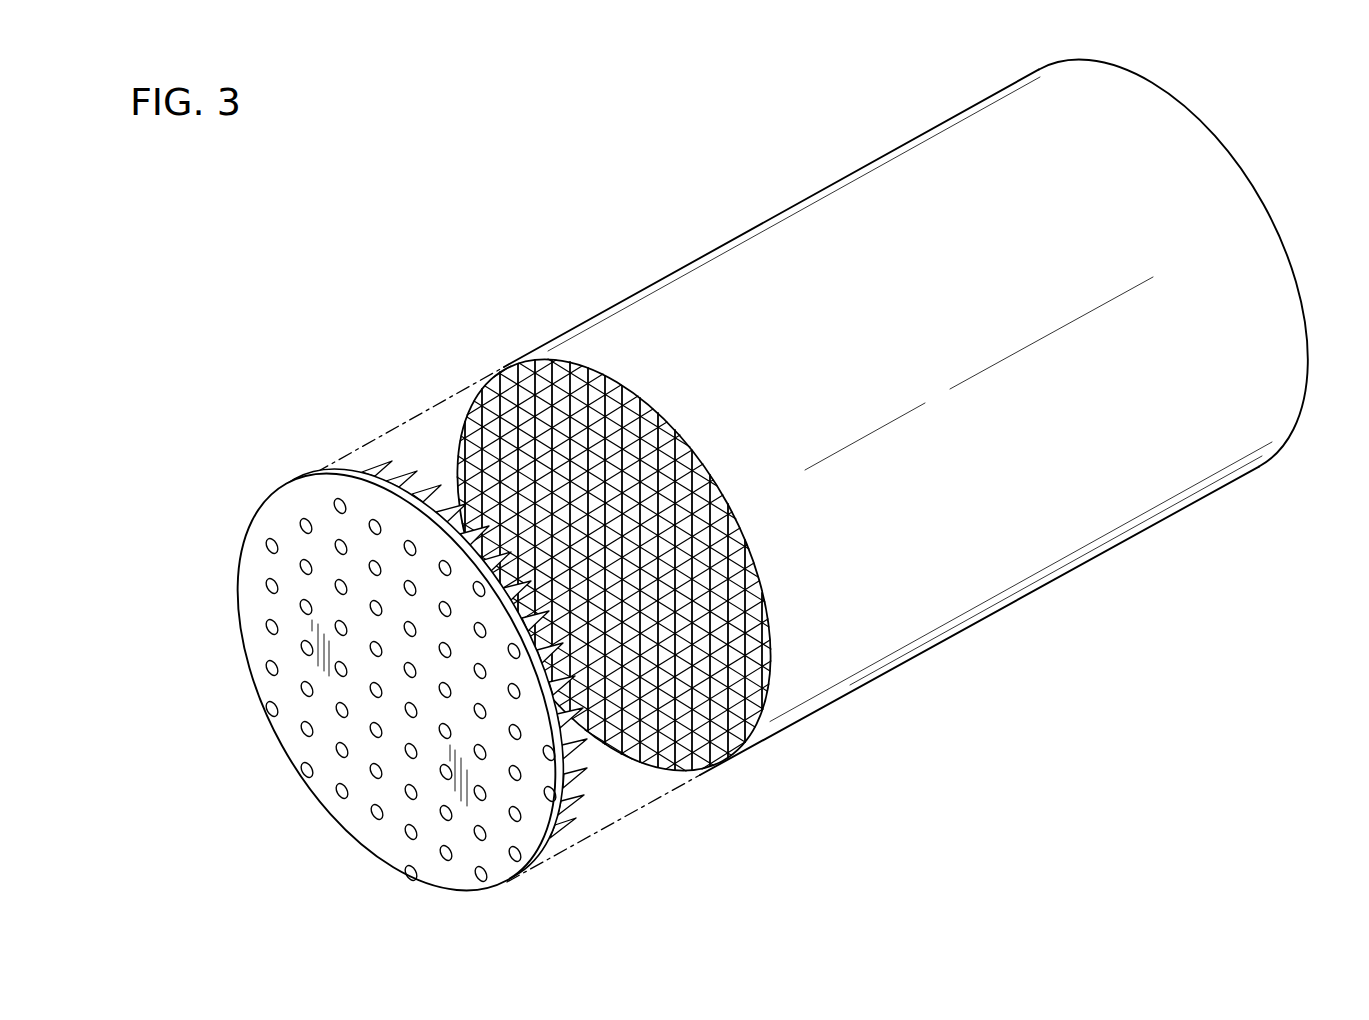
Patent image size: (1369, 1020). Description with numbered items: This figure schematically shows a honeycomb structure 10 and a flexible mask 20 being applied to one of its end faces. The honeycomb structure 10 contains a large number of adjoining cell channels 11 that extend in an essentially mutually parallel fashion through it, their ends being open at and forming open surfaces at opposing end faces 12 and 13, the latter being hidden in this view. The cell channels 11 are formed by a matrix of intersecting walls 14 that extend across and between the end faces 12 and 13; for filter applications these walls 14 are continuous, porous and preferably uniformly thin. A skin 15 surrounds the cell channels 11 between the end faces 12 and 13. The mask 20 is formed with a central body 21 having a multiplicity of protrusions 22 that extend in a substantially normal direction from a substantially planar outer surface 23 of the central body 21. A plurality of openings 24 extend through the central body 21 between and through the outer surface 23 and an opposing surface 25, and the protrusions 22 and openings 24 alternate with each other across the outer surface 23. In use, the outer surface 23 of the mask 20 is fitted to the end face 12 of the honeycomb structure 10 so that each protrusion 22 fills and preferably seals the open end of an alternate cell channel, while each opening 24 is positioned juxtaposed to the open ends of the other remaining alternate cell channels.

The honeycomb structure 10 is at (646, 266).
The cell channels 11 is at (768, 636).
The end face 12 is at (687, 775).
The end face 13 is at (1237, 157).
The intersecting walls 14 is at (757, 535).
The skin 15 is at (812, 243).
The flexible mask 20 is at (409, 657).
The central body 21 is at (337, 477).
The protrusions 22 is at (582, 797).
The outer surface 23 is at (384, 470).
The openings 24 is at (249, 606).
The opposing surface 25 is at (346, 815).